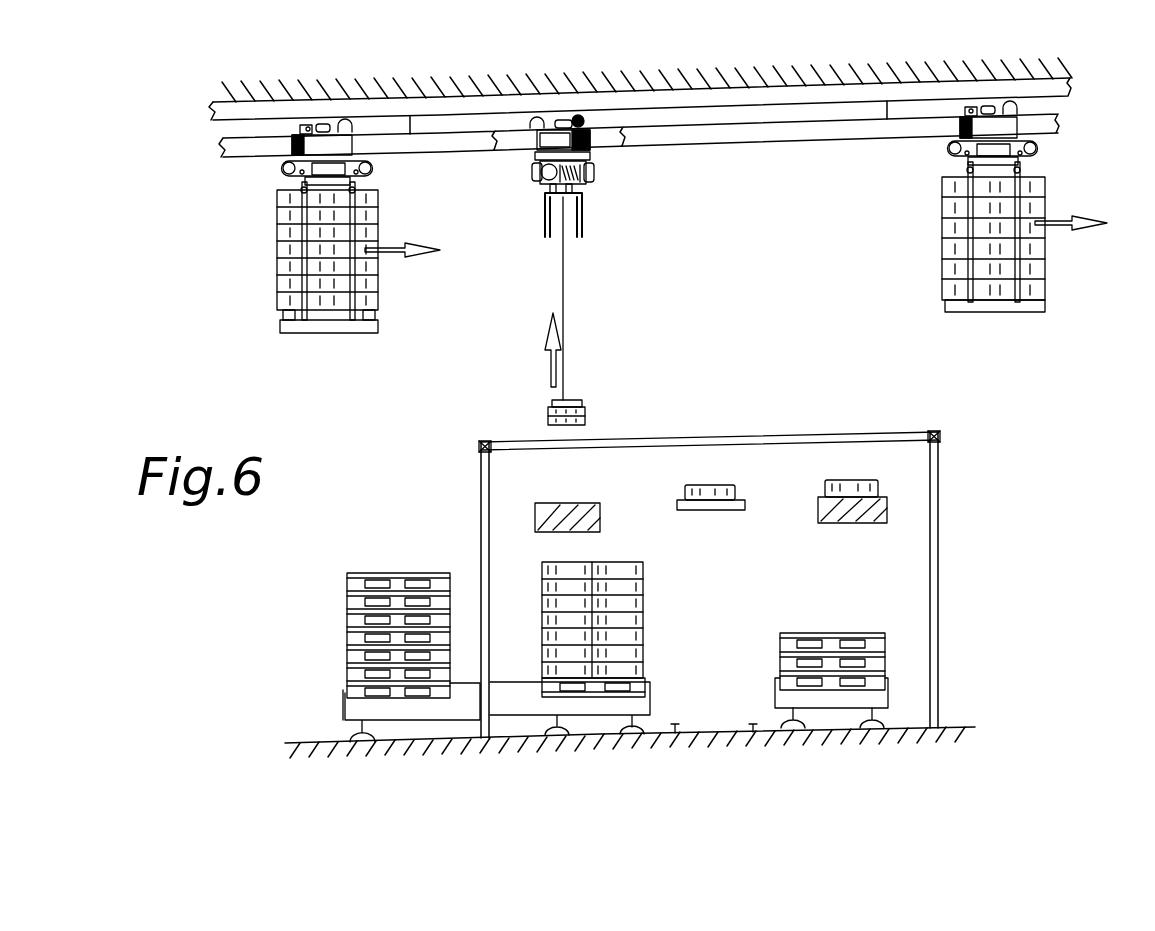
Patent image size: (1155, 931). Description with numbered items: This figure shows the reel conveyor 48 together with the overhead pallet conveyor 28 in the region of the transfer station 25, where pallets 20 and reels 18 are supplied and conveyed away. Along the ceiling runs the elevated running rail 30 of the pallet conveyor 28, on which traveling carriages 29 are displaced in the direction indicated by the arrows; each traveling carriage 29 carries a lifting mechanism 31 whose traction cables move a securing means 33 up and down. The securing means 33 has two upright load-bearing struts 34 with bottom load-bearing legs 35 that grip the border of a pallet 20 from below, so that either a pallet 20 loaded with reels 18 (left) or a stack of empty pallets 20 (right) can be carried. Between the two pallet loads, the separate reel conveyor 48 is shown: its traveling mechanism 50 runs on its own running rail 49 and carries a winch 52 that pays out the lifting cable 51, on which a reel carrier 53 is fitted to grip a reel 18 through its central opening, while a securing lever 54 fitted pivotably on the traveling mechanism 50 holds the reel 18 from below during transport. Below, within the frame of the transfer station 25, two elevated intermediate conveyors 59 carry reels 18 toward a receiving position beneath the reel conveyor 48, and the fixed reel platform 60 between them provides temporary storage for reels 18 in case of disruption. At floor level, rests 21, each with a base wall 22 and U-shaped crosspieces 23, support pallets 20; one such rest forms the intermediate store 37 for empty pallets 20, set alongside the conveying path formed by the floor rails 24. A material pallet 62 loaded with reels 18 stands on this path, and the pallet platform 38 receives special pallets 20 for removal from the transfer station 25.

The reel 18 is at (377, 296).
The pallet 20 is at (1037, 275).
The rest 21 is at (839, 721).
The base wall 22 is at (890, 702).
The crosspiece 23 is at (778, 708).
The rail 24 is at (690, 732).
The transfer station 25 is at (987, 569).
The pallet conveyor 28 is at (250, 198).
The traveling carriage 29 is at (298, 147).
The running rail 30 is at (233, 165).
The lifting mechanism 31 is at (1035, 150).
The securing means 33 is at (310, 360).
The load-bearing strut 34 is at (307, 303).
The load-bearing leg 35 is at (360, 331).
The intermediate store 37 is at (915, 650).
The pallet platform 38 is at (468, 748).
The reel conveyor 48 is at (650, 245).
The running rail 49 is at (598, 137).
The traveling mechanism 50 is at (537, 130).
The lifting cable 51 is at (564, 283).
The winch 52 is at (590, 172).
The reel carrier 53 is at (574, 400).
The securing lever 54 is at (583, 222).
The intermediate conveyor 59 is at (535, 518).
The reel platform 60 is at (675, 500).
The material pallet 62 is at (236, 292).